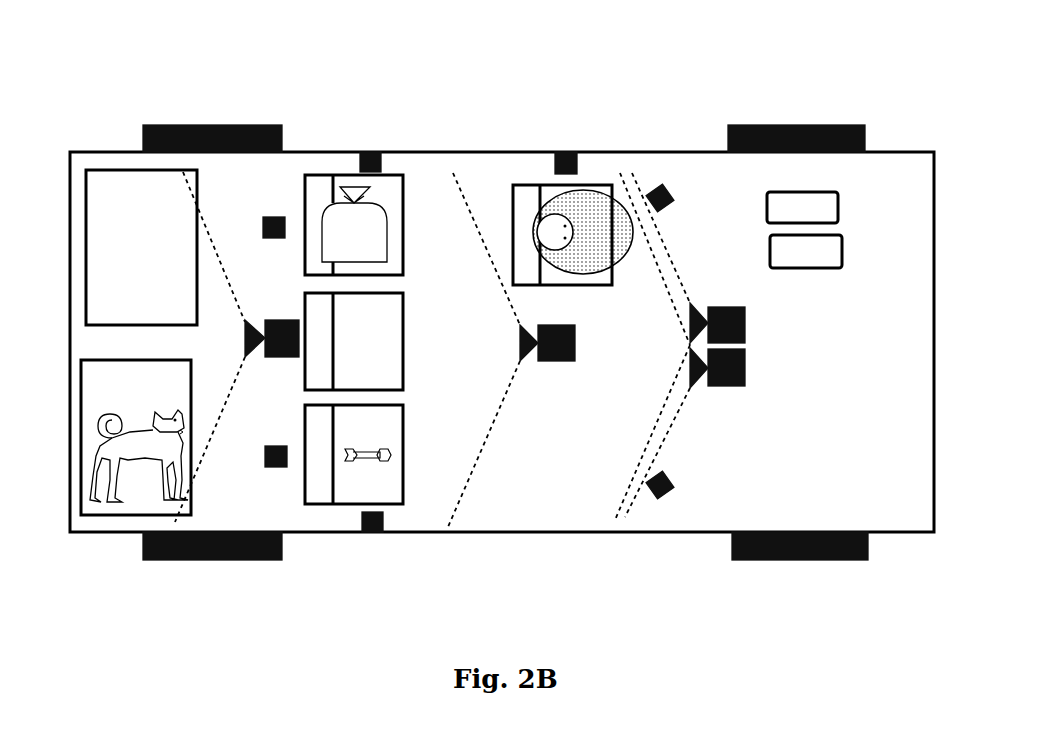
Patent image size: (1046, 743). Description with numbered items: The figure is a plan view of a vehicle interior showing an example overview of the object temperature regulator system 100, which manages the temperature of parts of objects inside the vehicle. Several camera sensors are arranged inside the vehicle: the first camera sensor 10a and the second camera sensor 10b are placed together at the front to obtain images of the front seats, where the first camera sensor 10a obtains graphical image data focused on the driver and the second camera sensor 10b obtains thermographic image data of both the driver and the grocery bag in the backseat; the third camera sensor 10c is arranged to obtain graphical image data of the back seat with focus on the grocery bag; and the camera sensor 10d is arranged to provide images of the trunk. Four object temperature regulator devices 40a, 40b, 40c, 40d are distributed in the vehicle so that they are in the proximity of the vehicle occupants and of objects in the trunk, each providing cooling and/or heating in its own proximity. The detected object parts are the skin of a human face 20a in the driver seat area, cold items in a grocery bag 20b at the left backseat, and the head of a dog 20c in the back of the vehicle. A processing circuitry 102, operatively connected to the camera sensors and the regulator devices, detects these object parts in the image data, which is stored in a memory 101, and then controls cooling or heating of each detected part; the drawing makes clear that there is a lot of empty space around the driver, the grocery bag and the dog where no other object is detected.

The object temperature regulator system 100 is at (156, 93).
The first camera sensor 10a is at (752, 321).
The second camera sensor 10b is at (752, 366).
The third camera sensor 10c is at (580, 350).
The camera sensor 10d is at (269, 368).
The skin of human face 20a is at (573, 246).
The grocery bag 20b is at (380, 198).
The head of a dog 20c is at (160, 404).
The object temperature regulator device 40a is at (668, 184).
The object temperature regulator device 40b is at (567, 147).
The object temperature regulator device 40c is at (371, 147).
The object temperature regulator device 40d is at (136, 437).
The memory 101 is at (802, 207).
The processing circuitry 102 is at (806, 251).